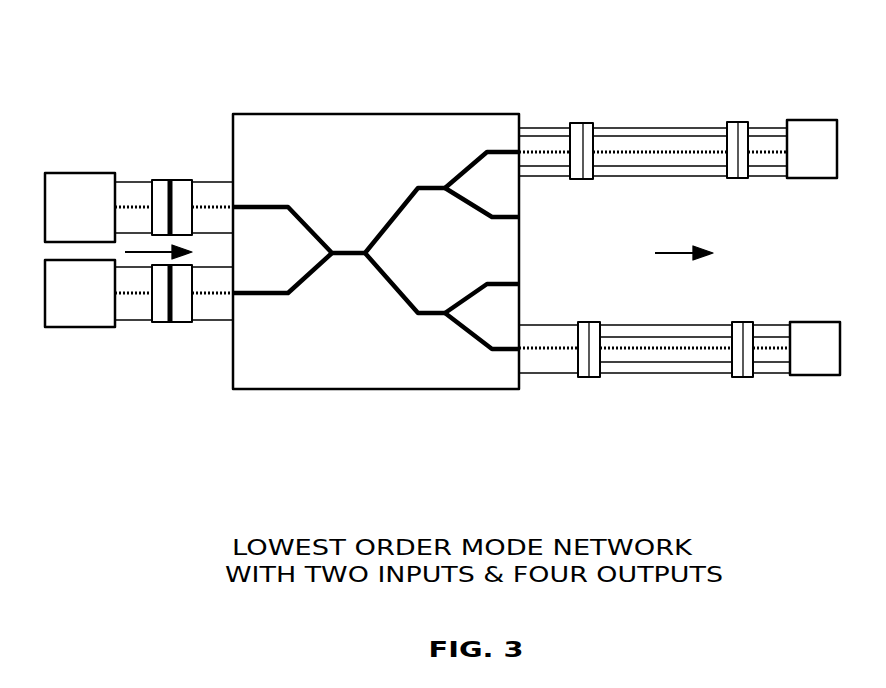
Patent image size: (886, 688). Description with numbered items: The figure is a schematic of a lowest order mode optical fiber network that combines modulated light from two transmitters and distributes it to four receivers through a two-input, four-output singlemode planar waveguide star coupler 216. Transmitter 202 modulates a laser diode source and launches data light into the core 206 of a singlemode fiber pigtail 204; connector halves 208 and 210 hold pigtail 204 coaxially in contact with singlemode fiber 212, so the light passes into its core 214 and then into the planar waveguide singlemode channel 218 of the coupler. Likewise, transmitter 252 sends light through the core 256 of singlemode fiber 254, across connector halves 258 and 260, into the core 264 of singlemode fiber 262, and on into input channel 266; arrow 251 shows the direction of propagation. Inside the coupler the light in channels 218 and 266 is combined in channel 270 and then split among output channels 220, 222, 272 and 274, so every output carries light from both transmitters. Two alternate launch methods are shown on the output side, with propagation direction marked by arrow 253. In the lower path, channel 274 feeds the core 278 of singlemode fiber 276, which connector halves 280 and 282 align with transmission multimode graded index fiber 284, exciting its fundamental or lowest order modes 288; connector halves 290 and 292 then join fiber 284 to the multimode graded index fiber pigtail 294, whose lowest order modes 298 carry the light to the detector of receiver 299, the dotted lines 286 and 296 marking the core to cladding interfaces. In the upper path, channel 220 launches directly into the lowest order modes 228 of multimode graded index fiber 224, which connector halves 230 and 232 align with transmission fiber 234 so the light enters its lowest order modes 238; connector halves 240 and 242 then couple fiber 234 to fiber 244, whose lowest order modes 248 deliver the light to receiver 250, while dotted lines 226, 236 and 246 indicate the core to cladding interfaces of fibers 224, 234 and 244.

The transmitter 202 is at (65, 173).
The singlemode fiber pigtail 204 is at (127, 183).
The core 206 is at (140, 207).
The connector half 208 is at (163, 180).
The connector half 210 is at (176, 180).
The singlemode fiber 212 is at (197, 182).
The core 214 is at (208, 207).
The singlemode planar waveguide star coupler 216 is at (350, 114).
The planar waveguide singlemode channel 218 is at (268, 207).
The channel 220 is at (503, 150).
The channel 222 is at (503, 215).
The multimode graded index fiber 224 is at (533, 128).
The core to cladding interface 226 is at (552, 137).
The fundamental mode or lowest order modes 228 is at (560, 150).
The connector half 230 is at (577, 180).
The connector half 232 is at (590, 180).
The transmission multimode graded index fiber 234 is at (618, 128).
The core to cladding interface 236 is at (665, 137).
The fundamental mode or lowest order modes 238 is at (707, 152).
The connector half 240 is at (732, 180).
The connector half 242 is at (743, 180).
The fiber 244 is at (762, 130).
The core to cladding interface 246 is at (773, 147).
The fundamental mode or lowest order modes 248 is at (783, 128).
The receiver 250 is at (817, 120).
The arrow 251 is at (142, 258).
The transmitter 252 is at (62, 327).
The arrow 253 is at (672, 256).
The singlemode fiber 254 is at (127, 320).
The core 256 is at (135, 297).
The connector half 258 is at (162, 322).
The connector half 260 is at (183, 322).
The singlemode fiber 262 is at (208, 320).
The singlemode core 264 is at (222, 296).
The channel 266 is at (267, 293).
The channel 270 is at (346, 253).
The channel 272 is at (498, 287).
The planar waveguide channel 274 is at (497, 350).
The singlemode fiber 276 is at (540, 373).
The core 278 is at (562, 353).
The connector half 280 is at (578, 322).
The connector half 282 is at (597, 322).
The transmission multimode graded index fiber 284 is at (628, 373).
The core to cladding interface 286 is at (660, 362).
The fundamental mode or lowest order modes 288 is at (695, 353).
The connector half 290 is at (738, 322).
The connector half 292 is at (748, 322).
The multimode graded index fiber pigtail 294 is at (760, 373).
The core to cladding interface 296 is at (770, 362).
The fundamental mode or lowest order modes 298 is at (775, 353).
The receiver 299 is at (820, 375).